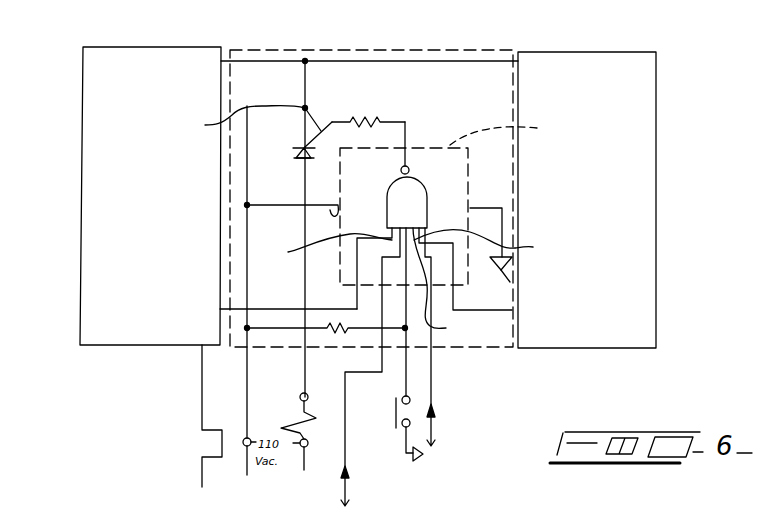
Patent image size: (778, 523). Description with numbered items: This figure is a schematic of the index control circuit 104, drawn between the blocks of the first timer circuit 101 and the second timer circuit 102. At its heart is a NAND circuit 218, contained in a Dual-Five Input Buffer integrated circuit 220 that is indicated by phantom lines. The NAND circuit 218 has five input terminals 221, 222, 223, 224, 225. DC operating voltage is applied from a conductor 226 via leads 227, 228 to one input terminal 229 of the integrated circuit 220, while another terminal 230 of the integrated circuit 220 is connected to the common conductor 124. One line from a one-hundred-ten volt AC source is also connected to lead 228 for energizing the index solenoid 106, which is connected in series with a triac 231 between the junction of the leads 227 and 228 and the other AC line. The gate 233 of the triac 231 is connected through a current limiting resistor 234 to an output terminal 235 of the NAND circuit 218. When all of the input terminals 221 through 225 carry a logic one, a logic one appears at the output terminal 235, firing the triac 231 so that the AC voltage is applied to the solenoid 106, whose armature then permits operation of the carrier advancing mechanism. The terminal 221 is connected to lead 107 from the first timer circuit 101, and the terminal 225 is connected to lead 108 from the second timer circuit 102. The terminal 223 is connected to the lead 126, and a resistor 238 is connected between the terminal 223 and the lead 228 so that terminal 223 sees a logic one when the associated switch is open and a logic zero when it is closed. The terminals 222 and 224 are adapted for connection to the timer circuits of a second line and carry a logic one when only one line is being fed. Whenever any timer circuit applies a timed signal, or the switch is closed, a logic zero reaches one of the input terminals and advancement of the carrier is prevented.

The first timer circuit 101 is at (80, 266).
The second timer circuit 102 is at (633, 263).
The index control circuit 104 is at (410, 50).
The index solenoid 106 is at (283, 432).
The lead 107 is at (283, 281).
The lead 108 is at (497, 313).
The common conductor 124 is at (510, 282).
The lead 126 is at (406, 370).
The NAND circuit 218 is at (418, 190).
The integrated circuit 220 is at (459, 198).
The input terminal 221 is at (322, 238).
The input terminal 222 is at (357, 304).
The input terminal 223 is at (449, 284).
The input terminal 224 is at (491, 235).
The input terminal 225 is at (454, 298).
The conductor 226 is at (372, 61).
The lead 227 is at (306, 100).
The lead 228 is at (278, 146).
The input terminal 229 is at (336, 212).
The terminal 230 is at (483, 208).
The triac 231 is at (300, 160).
The gate 233 is at (234, 119).
The current limiting resistor 234 is at (352, 118).
The output terminal 235 is at (408, 160).
The resistor 238 is at (338, 333).